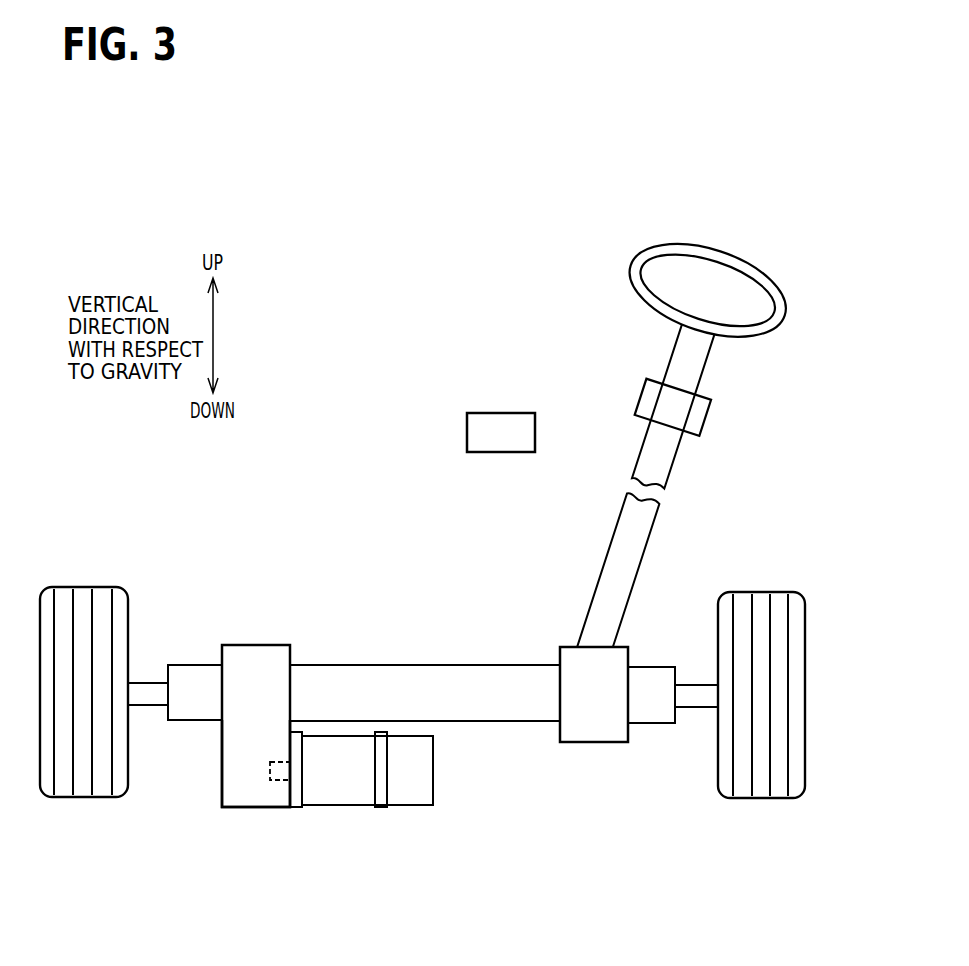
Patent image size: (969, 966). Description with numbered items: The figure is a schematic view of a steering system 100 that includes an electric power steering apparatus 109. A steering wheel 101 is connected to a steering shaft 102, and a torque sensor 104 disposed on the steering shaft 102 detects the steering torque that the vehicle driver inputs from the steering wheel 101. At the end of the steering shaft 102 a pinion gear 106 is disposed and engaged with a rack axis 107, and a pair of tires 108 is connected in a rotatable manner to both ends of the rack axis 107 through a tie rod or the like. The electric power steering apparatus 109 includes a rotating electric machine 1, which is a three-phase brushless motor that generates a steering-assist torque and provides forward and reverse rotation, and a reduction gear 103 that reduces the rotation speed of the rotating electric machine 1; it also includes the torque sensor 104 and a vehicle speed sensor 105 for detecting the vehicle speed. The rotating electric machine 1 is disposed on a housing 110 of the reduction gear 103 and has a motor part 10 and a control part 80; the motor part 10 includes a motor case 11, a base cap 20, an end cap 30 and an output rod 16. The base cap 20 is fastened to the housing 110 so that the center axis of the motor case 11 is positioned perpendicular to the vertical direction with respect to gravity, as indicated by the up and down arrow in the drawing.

The rotating electric machine 1 is at (447, 788).
The motor part 10 is at (350, 800).
The motor case 11 is at (327, 793).
The output rod 16 is at (268, 781).
The base cap 20 is at (295, 808).
The end cap 30 is at (379, 808).
The control part 80 is at (407, 797).
The steering system 100 is at (394, 294).
The steering wheel 101 is at (718, 247).
The steering shaft 102 is at (622, 532).
The reduction gear 103 is at (256, 655).
The torque sensor 104 is at (706, 416).
The vehicle speed sensor 105 is at (498, 422).
The pinion gear 106 is at (595, 733).
The rack axis 107 is at (517, 712).
The tires 108 is at (80, 608).
The electric power steering apparatus 109 is at (291, 525).
The housing 110 is at (226, 772).